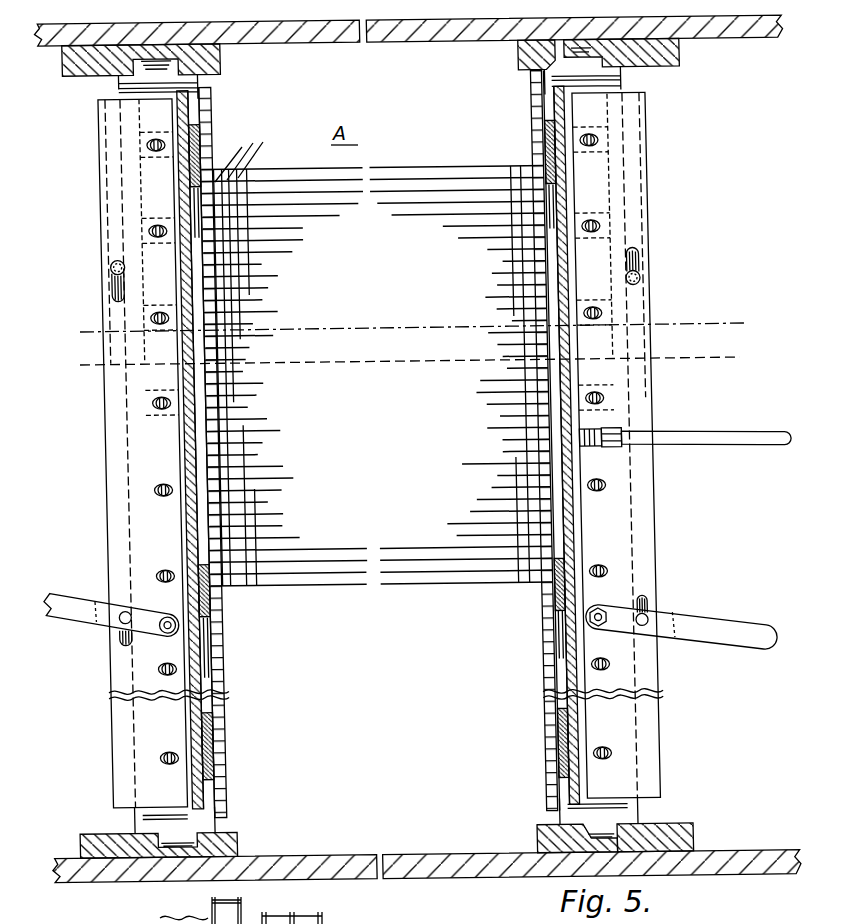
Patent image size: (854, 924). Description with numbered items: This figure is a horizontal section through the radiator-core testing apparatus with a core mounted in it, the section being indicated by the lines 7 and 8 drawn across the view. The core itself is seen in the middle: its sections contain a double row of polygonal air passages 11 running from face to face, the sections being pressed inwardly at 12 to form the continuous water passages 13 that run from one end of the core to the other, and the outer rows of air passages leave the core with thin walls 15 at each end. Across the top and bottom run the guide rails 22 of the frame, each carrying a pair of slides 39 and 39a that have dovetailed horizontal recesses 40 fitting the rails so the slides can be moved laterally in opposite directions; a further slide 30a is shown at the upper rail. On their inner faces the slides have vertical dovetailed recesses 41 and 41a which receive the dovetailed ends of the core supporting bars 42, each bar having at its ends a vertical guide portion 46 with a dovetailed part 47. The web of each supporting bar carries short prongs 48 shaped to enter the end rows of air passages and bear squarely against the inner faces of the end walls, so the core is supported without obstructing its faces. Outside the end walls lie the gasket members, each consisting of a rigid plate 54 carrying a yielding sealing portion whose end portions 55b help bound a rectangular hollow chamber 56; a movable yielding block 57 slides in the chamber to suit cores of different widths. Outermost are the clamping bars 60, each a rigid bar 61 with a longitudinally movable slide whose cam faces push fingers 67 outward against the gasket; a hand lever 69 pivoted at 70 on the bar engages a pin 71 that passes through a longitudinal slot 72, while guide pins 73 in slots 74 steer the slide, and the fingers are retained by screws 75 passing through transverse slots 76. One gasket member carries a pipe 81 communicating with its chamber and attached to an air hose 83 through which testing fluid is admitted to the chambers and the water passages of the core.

The section line 7 is at (402, 329).
The section line 8 is at (402, 363).
The air passages 11 is at (244, 153).
The indentation 12 is at (250, 915).
The water passages 13 is at (322, 913).
The thin walls 15 is at (227, 407).
The guide rails 22 is at (424, 40).
The bearing block 30a is at (519, 62).
The slide 39 is at (222, 58).
The slide 39a is at (692, 833).
The dovetailed horizontal recesses 40 is at (260, 858).
The vertical dovetailed recesses 41 is at (172, 62).
The vertical dovetailed recesses 41a is at (588, 60).
The core supporting bars 42 is at (622, 88).
The vertical guide portion 46 is at (150, 65).
The dovetailed part 47 is at (662, 53).
The prongs 48 is at (535, 304).
The plate 54 is at (568, 522).
The end portions 55b is at (203, 148).
The chamber 56 is at (180, 517).
The yielding block 57 is at (197, 572).
The clamping bars 60 is at (376, 450).
The rigid bar 61 is at (112, 413).
The fingers 67 is at (178, 312).
The hand lever 69 is at (73, 603).
The pivot 70 is at (163, 632).
The pin 71 is at (127, 614).
The longitudinal slot 72 is at (118, 638).
The guide pins 73 is at (112, 269).
The slots 74 is at (112, 295).
The screws 75 is at (592, 302).
The transverse slots 76 is at (156, 408).
The pipe 81 is at (595, 432).
The air hose 83 is at (752, 432).